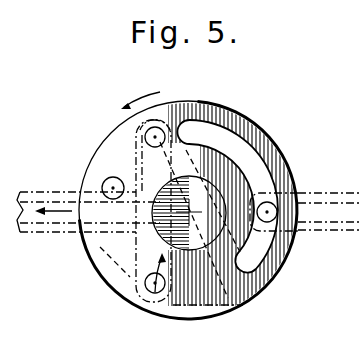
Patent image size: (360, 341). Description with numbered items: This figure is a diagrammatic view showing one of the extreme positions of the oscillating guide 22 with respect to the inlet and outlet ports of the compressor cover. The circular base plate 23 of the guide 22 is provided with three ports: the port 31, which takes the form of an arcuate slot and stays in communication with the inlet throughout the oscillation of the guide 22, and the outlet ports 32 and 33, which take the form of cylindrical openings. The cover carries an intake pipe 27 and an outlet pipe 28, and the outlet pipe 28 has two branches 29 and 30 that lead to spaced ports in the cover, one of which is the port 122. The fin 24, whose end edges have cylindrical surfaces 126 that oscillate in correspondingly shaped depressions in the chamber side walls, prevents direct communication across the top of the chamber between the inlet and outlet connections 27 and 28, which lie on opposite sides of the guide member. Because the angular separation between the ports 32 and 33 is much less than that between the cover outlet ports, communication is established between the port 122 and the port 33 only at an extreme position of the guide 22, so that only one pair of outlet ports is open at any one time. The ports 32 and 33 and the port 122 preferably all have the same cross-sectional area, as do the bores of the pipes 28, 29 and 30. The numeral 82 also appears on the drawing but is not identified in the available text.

The guide 22 is at (78, 256).
The base plate 23 is at (196, 113).
The fin 24 is at (226, 306).
The intake pipe 27 is at (331, 208).
The outlet pipe 28 is at (47, 204).
The branch 29 is at (152, 253).
The branch 30 is at (143, 160).
The port 31 is at (257, 161).
The outlet port 32 is at (154, 298).
The outlet port 33 is at (112, 178).
The hub 82 is at (189, 212).
The port 122 is at (161, 128).
The cylindrical surfaces 126 is at (161, 241).